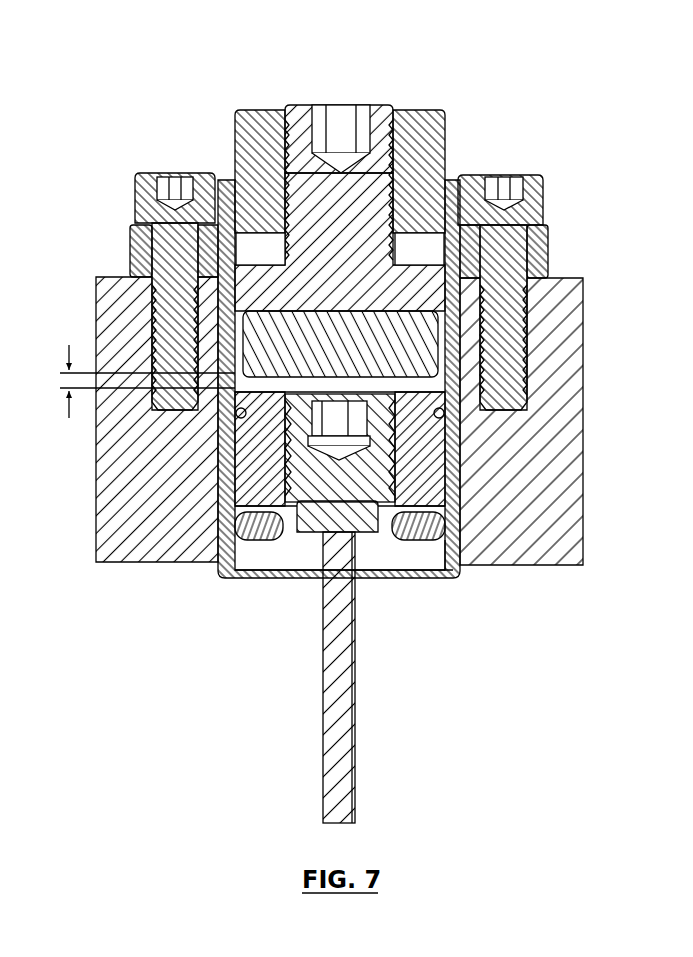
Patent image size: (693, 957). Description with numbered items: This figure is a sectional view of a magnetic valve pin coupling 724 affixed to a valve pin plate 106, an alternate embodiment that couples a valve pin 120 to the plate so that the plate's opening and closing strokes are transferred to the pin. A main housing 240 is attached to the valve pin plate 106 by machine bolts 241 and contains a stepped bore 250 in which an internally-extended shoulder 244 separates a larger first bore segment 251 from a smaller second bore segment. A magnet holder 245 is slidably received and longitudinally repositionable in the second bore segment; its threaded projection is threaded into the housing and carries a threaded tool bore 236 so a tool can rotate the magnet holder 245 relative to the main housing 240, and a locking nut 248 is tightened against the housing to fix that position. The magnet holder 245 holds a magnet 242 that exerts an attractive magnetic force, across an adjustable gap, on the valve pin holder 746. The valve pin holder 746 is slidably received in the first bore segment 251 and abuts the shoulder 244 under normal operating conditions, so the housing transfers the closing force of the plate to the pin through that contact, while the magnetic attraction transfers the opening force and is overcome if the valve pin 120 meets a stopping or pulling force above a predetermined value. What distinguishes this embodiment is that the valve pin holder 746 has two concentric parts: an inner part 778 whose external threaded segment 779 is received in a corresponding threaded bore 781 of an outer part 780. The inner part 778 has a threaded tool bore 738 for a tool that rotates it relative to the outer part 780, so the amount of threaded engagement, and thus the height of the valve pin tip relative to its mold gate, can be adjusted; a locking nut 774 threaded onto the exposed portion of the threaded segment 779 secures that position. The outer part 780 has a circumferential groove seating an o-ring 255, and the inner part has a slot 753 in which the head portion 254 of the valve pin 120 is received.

The magnetic valve pin coupling 724 is at (346, 425).
The valve pin plate 106 is at (567, 570).
The threaded tool bore 738 is at (460, 480).
The magnet 242 is at (447, 386).
The main housing 240 is at (553, 250).
The machine bolts 241 is at (548, 176).
The threaded tool bore 236 is at (341, 113).
The locking nut 248 is at (448, 140).
The stepped bore 250 is at (422, 244).
The magnet holder 245 is at (455, 302).
The shoulder 244 is at (462, 400).
The head portion 254 is at (366, 578).
The o-ring 255 is at (447, 470).
The inner part 778 is at (238, 417).
The external threaded segment 779 is at (237, 450).
The threaded bore 781 is at (233, 475).
The slot 753 is at (282, 578).
The locking nut 774 is at (258, 578).
The valve pin holder 746 is at (462, 505).
The outer part 780 is at (462, 520).
The first bore segment 251 is at (450, 585).
The valve pin 120 is at (355, 712).